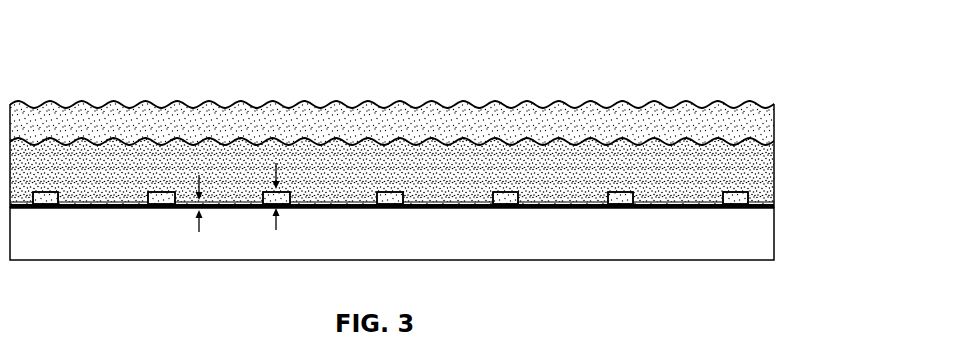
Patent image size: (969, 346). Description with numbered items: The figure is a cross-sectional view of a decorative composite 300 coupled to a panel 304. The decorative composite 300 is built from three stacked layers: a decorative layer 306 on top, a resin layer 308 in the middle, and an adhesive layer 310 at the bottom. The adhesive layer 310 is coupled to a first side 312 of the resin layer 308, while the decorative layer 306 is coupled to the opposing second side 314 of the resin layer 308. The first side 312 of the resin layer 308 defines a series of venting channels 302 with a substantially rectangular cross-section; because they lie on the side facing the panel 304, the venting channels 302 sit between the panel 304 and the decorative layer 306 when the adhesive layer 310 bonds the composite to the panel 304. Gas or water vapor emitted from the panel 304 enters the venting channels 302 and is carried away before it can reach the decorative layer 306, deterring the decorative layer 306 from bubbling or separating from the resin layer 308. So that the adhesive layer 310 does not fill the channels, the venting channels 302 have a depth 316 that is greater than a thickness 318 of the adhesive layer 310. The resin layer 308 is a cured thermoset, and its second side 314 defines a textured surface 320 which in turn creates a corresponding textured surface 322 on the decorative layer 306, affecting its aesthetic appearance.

The decorative composite 300 is at (703, 33).
The venting channels 302 is at (43, 210).
The panel 304 is at (663, 252).
The decorative layer 306 is at (590, 115).
The resin layer 308 is at (762, 178).
The adhesive layer 310 is at (555, 210).
The first side 312 is at (447, 210).
The second side 314 is at (118, 138).
The depth 316 is at (276, 230).
The thickness 318 is at (199, 232).
The textured surface 320 is at (300, 108).
The textured surface 322 is at (390, 92).